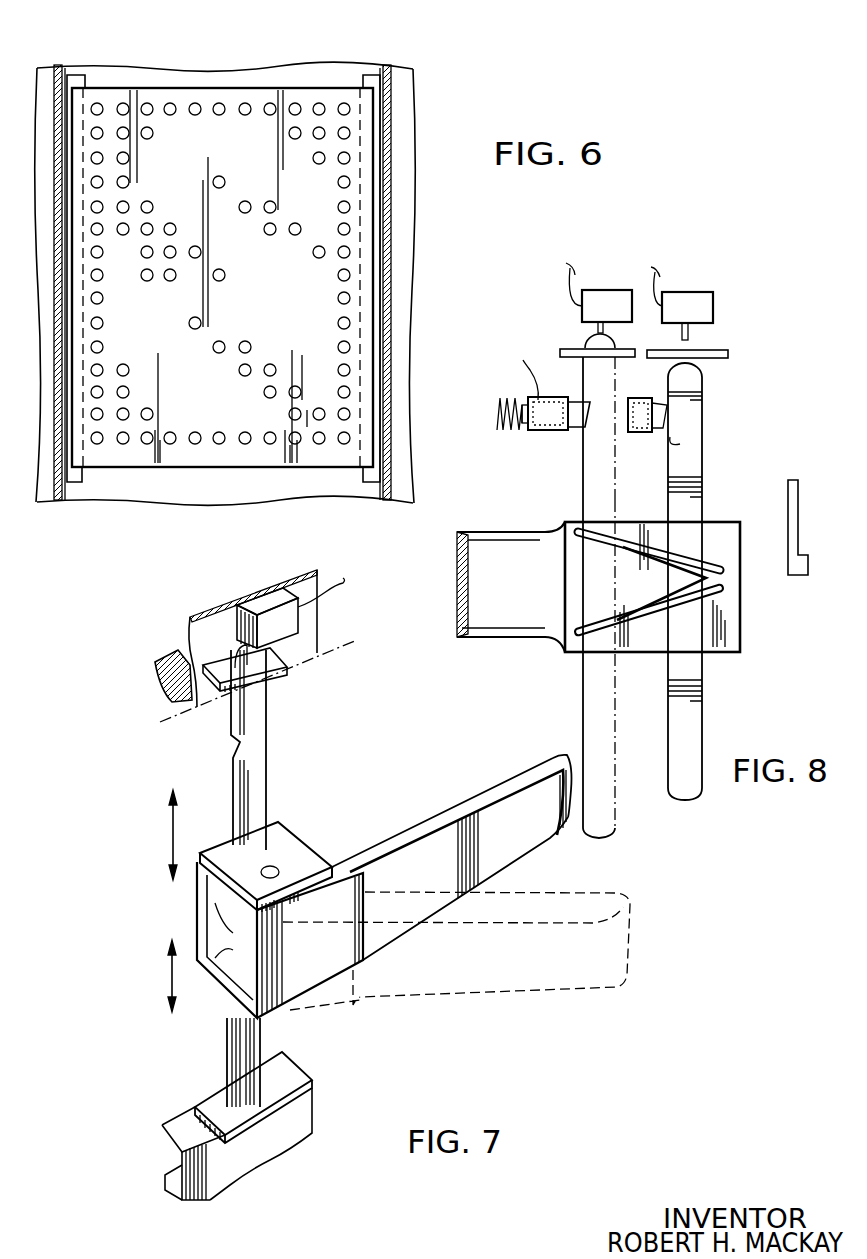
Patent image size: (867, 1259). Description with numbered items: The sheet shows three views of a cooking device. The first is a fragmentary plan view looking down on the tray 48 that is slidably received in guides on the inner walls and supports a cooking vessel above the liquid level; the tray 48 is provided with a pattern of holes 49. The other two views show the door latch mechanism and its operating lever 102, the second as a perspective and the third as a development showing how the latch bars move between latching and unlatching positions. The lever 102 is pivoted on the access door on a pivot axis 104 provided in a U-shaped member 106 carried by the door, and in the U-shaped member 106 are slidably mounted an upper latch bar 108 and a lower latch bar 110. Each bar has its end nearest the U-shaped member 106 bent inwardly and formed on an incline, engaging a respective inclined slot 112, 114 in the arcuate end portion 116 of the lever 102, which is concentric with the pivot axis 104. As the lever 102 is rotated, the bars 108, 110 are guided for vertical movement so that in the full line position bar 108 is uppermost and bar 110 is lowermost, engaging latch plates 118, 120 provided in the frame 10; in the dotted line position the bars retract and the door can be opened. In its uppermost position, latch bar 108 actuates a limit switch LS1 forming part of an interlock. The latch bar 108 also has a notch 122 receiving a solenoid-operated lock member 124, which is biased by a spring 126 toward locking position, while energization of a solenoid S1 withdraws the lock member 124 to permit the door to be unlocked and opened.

In FIG. 6, the tray 48 is at (207, 106).
In FIG. 6, the holes 49 is at (343, 104).
In FIG. 7, the frame 10 is at (178, 657).
In FIG. 7, the lever 102 is at (473, 805).
In FIG. 7, the pivot axis 104 is at (279, 868).
In FIG. 7, the U-shaped member 106 is at (202, 905).
In FIG. 8, the latch bar 108 is at (593, 495).
In FIG. 7, the latch bar 108 is at (260, 775).
In FIG. 8, the latch bar 110 is at (595, 718).
In FIG. 7, the latch bar 110 is at (230, 1050).
In FIG. 8, the inclined slot 112 is at (623, 547).
In FIG. 8, the inclined slot 114 is at (660, 597).
In FIG. 8, the arcuate end portion 116 is at (645, 652).
In FIG. 7, the latch plate 118 is at (282, 672).
In FIG. 7, the latch plate 120 is at (273, 1107).
In FIG. 8, the notch 122 is at (680, 442).
In FIG. 8, the lock member 124 is at (578, 407).
In FIG. 8, the spring 126 is at (508, 430).
In FIG. 8, the limit switch LS1 is at (685, 297).
In FIG. 7, the limit switch LS1 is at (267, 605).
In FIG. 8, the solenoid S1 is at (538, 408).